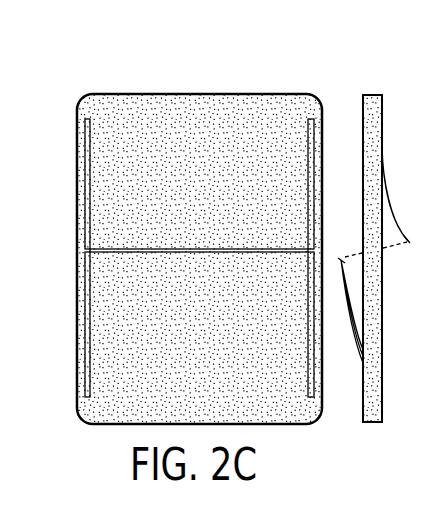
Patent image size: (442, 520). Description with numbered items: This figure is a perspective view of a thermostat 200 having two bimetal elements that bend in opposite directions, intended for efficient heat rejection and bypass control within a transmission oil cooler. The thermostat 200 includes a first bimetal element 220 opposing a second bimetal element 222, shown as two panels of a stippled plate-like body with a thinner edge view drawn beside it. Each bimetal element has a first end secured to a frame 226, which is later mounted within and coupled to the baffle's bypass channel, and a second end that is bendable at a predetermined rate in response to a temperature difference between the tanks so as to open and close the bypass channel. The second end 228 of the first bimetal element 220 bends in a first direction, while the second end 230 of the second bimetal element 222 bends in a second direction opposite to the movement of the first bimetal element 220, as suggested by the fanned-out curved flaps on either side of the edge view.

The thermostat 200 is at (209, 82).
The first bimetal element 220 is at (117, 158).
The second bimetal element 222 is at (130, 332).
The frame 226 is at (75, 226).
The second end of the first bimetal element 228 is at (410, 237).
The second end of the second bimetal element 230 is at (341, 254).